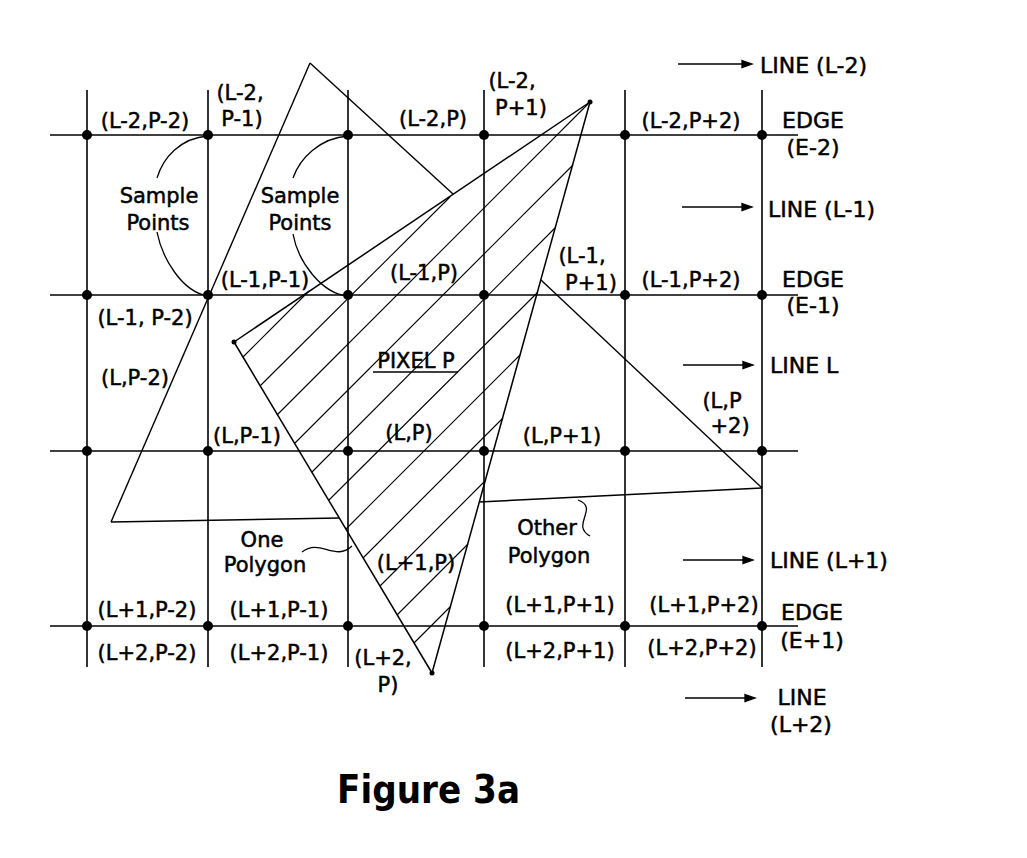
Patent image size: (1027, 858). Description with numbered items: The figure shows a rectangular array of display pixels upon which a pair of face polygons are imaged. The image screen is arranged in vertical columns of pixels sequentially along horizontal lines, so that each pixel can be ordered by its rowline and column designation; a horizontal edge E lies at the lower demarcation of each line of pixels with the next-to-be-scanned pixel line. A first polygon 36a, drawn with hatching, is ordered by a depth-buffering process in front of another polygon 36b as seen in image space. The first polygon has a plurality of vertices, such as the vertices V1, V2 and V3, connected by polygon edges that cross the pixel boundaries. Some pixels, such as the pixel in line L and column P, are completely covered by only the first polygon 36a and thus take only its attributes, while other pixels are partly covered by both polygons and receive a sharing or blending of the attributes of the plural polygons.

The first polygon 36a is at (564, 196).
The another polygon 36b is at (612, 344).
The vertex V1 is at (594, 89).
The vertex V2 is at (226, 330).
The vertex V3 is at (434, 687).
The horizontal edge E is at (445, 452).